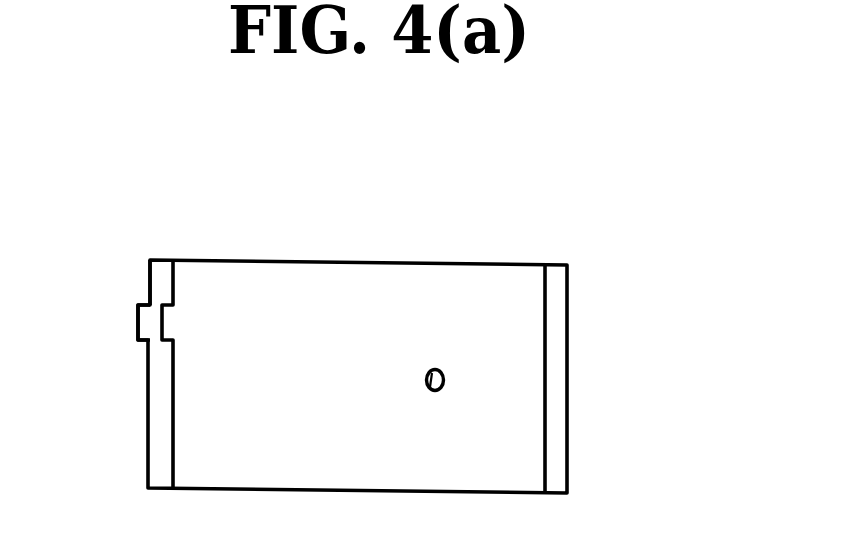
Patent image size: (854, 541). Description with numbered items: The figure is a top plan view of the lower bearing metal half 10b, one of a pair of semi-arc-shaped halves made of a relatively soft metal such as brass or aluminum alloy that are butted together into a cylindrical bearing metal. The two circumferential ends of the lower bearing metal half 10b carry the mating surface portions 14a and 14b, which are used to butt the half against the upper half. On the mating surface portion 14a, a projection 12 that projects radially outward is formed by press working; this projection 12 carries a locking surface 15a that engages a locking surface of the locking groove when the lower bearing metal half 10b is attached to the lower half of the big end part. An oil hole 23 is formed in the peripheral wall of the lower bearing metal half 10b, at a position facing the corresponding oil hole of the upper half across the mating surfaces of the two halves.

The lower bearing metal half 10b is at (451, 256).
The projection 12 is at (137, 320).
The mating surface portion 14a is at (160, 403).
The mating surface portion 14b is at (555, 420).
The locking surface 15a is at (145, 303).
The oil hole 23 is at (427, 371).